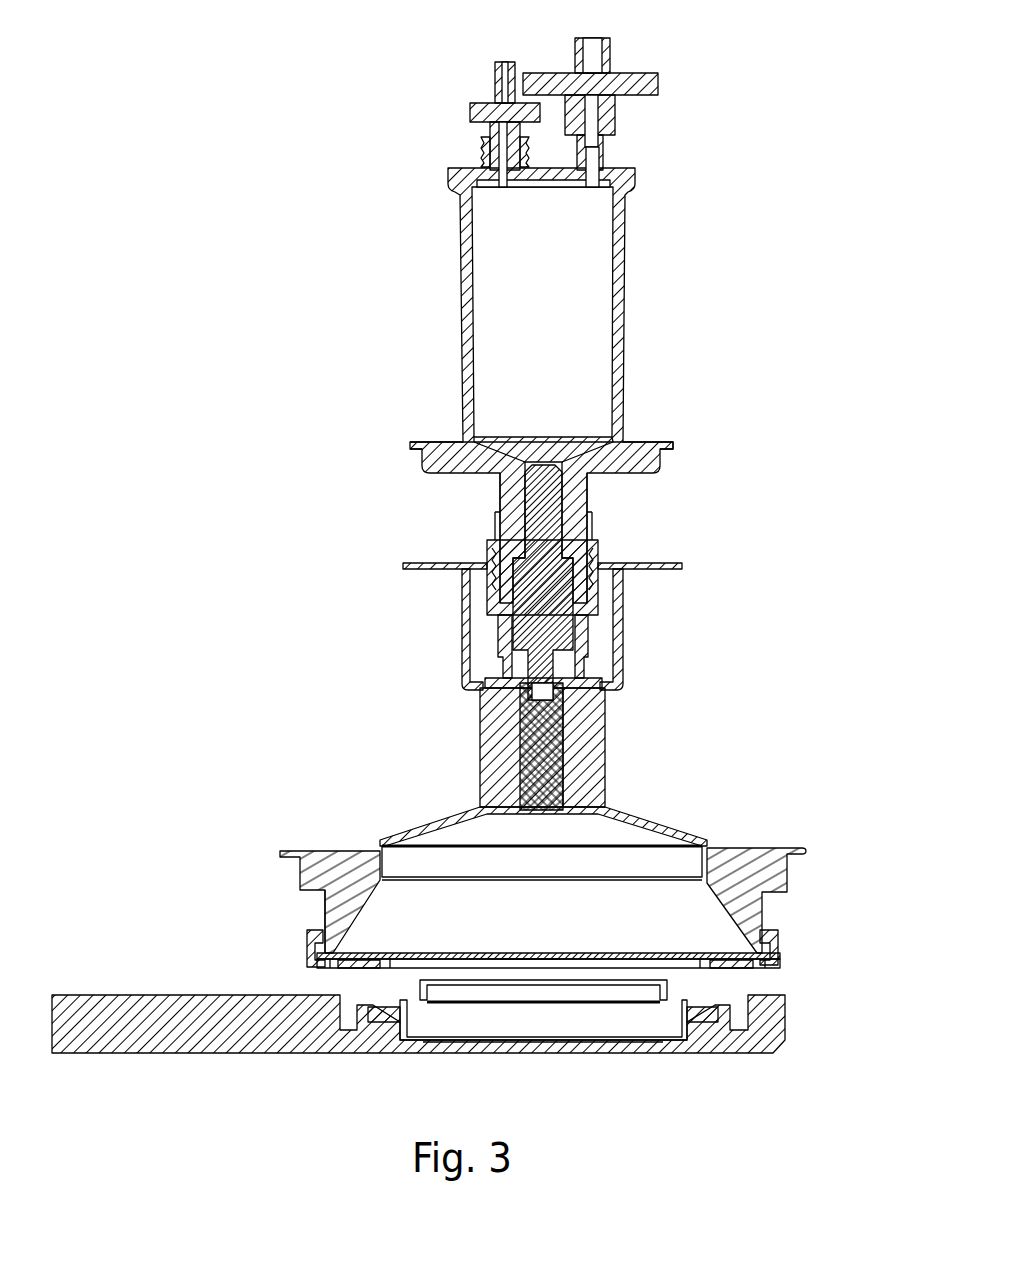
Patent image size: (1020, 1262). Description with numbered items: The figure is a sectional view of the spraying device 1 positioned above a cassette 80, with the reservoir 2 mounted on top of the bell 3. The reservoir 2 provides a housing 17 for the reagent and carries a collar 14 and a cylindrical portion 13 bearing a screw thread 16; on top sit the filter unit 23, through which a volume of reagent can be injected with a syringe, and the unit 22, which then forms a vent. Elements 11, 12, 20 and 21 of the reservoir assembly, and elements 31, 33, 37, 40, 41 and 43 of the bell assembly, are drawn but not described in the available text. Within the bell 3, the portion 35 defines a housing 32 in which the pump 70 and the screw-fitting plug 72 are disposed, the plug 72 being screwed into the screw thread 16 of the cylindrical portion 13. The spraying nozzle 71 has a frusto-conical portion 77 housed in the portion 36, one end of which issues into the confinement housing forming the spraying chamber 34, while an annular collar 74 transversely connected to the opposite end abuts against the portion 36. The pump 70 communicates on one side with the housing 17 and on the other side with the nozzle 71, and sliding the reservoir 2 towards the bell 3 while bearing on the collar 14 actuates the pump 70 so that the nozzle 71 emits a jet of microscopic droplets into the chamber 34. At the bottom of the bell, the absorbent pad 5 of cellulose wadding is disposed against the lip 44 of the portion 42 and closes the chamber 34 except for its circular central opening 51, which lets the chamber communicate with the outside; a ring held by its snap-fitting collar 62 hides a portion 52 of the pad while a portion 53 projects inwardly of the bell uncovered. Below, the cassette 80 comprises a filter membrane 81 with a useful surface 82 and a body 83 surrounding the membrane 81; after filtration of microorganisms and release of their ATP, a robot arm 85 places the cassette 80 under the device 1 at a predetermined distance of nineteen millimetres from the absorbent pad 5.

The spraying device 1 is at (298, 101).
The reservoir 2 is at (370, 313).
The bell 3 is at (266, 744).
The absorbent pad 5 is at (400, 948).
The closure plate 11 is at (545, 180).
The syringe barrel 12 is at (620, 247).
The cylindrical portion 13 is at (575, 490).
The collar 14 is at (676, 446).
The screw thread 16 is at (590, 556).
The housing of the reservoir 17 is at (580, 332).
The valve 20 is at (486, 147).
The connector 21 is at (603, 152).
The unit 22 is at (492, 104).
The filter unit 23 is at (590, 82).
The adapter 31 is at (662, 702).
The housing 32 is at (478, 646).
The housing 33 is at (818, 870).
The spraying chamber 34 is at (592, 913).
The portion 35 is at (463, 602).
The portion 36 is at (492, 762).
The flange plate 37 is at (430, 565).
The cone 40 is at (445, 822).
The housing wall 41 is at (372, 870).
The portion 42 is at (350, 905).
The housing flange 43 is at (800, 848).
The lip 44 is at (775, 950).
The circular central opening 51 is at (625, 957).
The portion of the pad 52 is at (635, 958).
The portion of the pad 53 is at (685, 958).
The snap-fitting collar 62 is at (310, 950).
The pump 70 is at (543, 511).
The spraying nozzle 71 is at (578, 790).
The screw-fitting plug 72 is at (590, 590).
The annular collar 74 is at (487, 684).
The frusto-conical portion 77 is at (540, 733).
The cassette 80 is at (465, 1060).
The filter membrane 81 is at (540, 1005).
The useful surface 82 is at (510, 1000).
The body 83 is at (385, 1012).
The robot arm 85 is at (175, 1022).